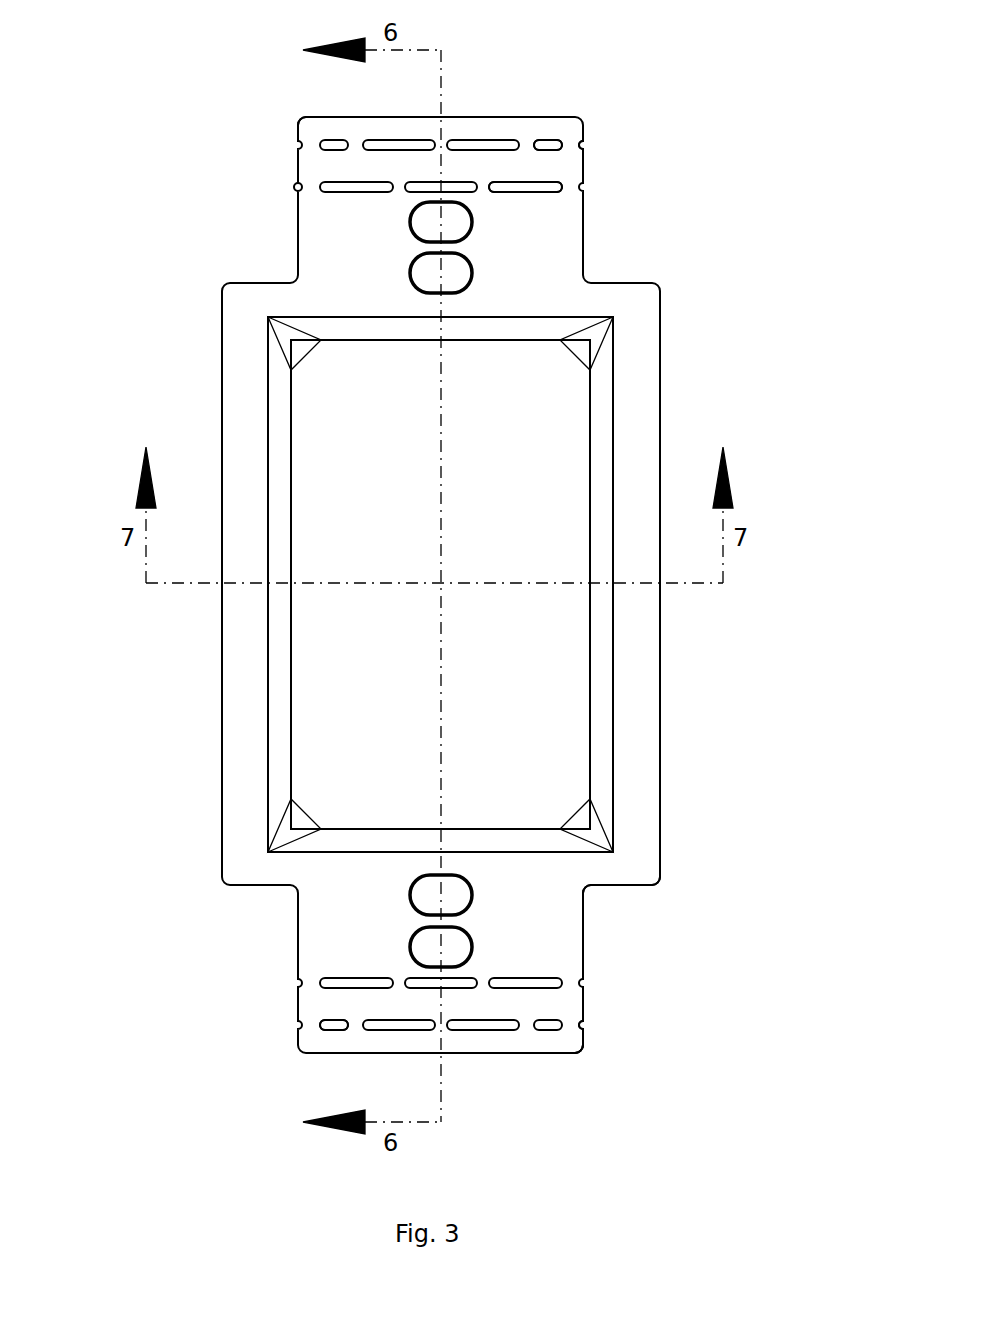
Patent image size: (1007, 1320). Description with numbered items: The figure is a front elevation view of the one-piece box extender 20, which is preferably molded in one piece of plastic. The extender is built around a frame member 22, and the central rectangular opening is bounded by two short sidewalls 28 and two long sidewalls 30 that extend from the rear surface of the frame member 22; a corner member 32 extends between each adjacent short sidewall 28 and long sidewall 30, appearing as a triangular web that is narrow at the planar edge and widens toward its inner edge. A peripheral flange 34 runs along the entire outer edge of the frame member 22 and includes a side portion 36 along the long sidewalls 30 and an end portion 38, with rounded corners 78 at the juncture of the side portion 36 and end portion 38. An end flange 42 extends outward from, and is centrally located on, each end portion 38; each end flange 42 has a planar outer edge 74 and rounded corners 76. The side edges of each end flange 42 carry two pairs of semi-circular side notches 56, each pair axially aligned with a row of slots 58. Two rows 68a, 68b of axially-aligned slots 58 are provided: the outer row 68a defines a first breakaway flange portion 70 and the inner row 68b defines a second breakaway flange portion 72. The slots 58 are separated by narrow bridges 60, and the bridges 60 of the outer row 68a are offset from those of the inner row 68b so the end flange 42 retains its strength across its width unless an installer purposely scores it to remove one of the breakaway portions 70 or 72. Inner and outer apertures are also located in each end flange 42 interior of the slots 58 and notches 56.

The one-piece box extender 20 is at (170, 104).
The frame member 22 is at (662, 324).
The short sidewalls 28 is at (384, 332).
The long sidewalls 30 is at (282, 480).
The corner member 32 is at (583, 347).
The peripheral flange 34 is at (637, 638).
The side portion 36 is at (662, 765).
The end portion 38 is at (600, 872).
The end flange 42 is at (536, 253).
The side notches 56 is at (585, 145).
The slots 58 is at (485, 147).
The narrow bridges 60 is at (355, 1022).
The outer row of axially-aligned slots 68a is at (548, 147).
The inner row of axially-aligned slots 68b is at (538, 187).
The first breakaway flange portion 70 is at (305, 122).
The second breakaway flange portion 72 is at (308, 167).
The planar outer edge 74 is at (492, 1053).
The rounded corners 76 is at (583, 1052).
The rounded corners 78 is at (657, 885).